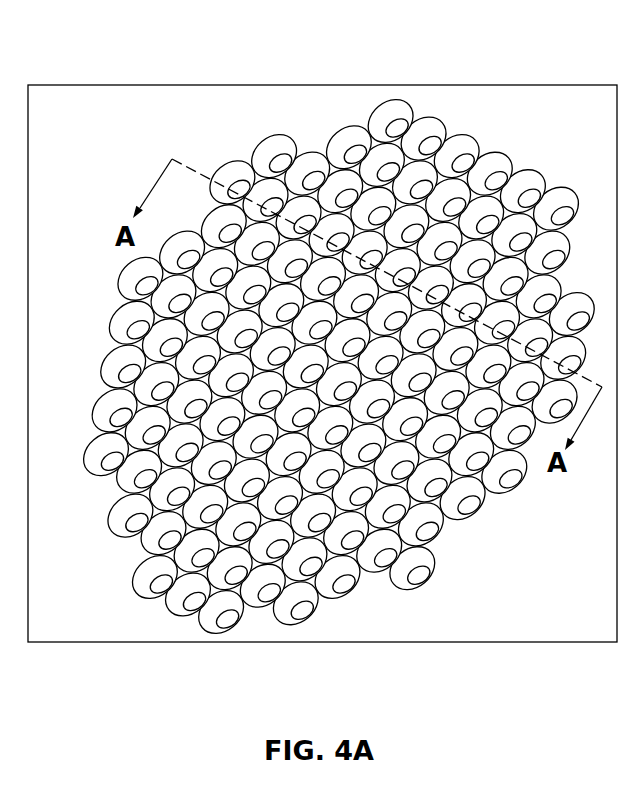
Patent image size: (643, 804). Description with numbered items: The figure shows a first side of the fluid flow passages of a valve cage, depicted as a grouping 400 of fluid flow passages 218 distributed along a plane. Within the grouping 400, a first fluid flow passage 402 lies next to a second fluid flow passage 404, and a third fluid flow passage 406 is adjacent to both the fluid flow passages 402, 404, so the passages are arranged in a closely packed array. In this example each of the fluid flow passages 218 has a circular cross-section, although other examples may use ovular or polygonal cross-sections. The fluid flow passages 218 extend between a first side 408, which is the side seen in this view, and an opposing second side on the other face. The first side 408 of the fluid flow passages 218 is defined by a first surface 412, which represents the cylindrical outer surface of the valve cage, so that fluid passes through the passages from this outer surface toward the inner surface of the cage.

The grouping 400 is at (508, 67).
The fluid flow passages 218 is at (339, 355).
The fluid flow passage 402 is at (229, 176).
The fluid flow passage 404 is at (262, 155).
The fluid flow passage 406 is at (274, 197).
The first side 408 is at (388, 597).
The first surface 412 is at (562, 176).